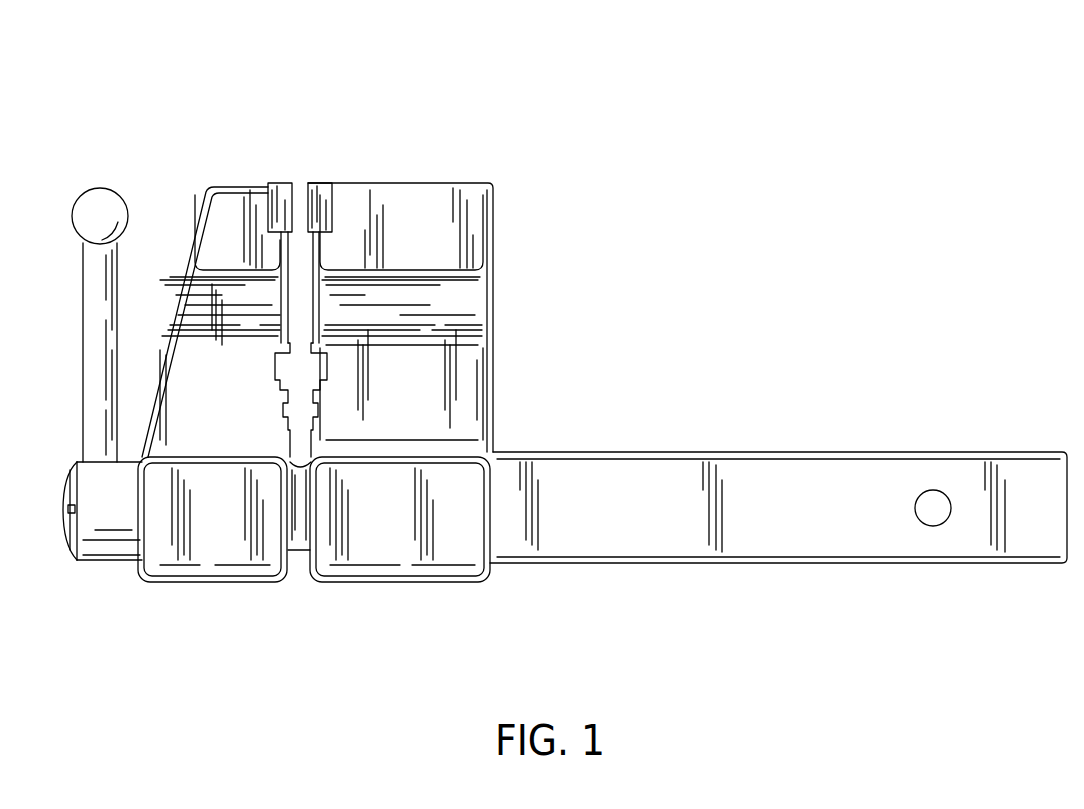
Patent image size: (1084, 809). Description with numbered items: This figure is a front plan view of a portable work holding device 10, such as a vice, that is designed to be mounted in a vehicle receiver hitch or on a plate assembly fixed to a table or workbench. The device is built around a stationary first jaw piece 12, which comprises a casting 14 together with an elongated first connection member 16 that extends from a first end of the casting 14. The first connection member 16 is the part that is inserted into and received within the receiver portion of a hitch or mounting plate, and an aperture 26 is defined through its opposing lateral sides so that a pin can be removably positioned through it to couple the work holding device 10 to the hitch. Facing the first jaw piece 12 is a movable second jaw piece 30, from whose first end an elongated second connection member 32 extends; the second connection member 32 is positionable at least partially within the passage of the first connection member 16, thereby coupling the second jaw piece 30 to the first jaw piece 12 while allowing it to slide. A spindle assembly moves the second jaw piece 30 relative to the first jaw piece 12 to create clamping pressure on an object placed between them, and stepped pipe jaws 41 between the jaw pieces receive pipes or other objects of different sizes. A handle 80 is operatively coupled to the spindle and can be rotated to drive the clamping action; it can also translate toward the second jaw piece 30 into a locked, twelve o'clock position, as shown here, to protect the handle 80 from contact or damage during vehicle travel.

The work holding device 10 is at (754, 121).
The first jaw piece 12 is at (493, 198).
The casting 14 is at (472, 387).
The first connection member 16 is at (810, 473).
The aperture 26 is at (933, 490).
The second jaw piece 30 is at (227, 563).
The second connection member 32 is at (299, 541).
The pipe jaws 41 is at (276, 372).
The handle 80 is at (103, 493).